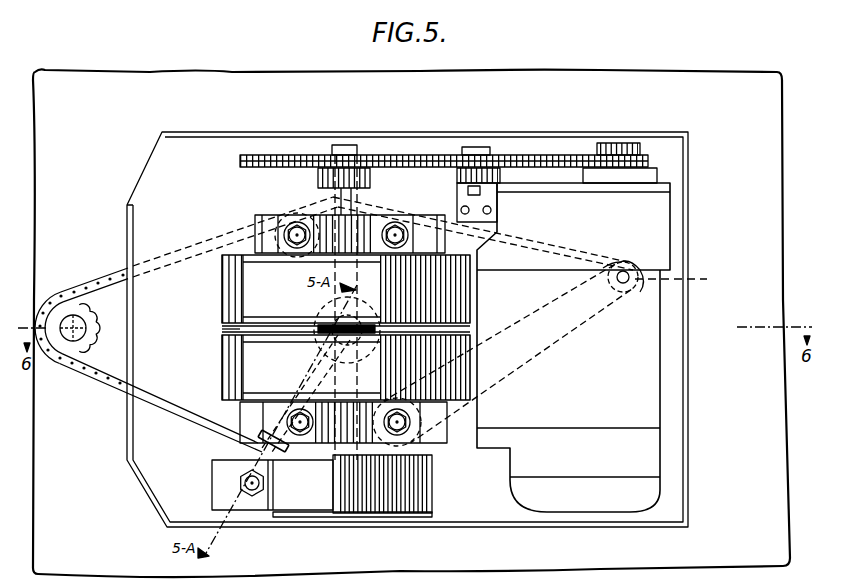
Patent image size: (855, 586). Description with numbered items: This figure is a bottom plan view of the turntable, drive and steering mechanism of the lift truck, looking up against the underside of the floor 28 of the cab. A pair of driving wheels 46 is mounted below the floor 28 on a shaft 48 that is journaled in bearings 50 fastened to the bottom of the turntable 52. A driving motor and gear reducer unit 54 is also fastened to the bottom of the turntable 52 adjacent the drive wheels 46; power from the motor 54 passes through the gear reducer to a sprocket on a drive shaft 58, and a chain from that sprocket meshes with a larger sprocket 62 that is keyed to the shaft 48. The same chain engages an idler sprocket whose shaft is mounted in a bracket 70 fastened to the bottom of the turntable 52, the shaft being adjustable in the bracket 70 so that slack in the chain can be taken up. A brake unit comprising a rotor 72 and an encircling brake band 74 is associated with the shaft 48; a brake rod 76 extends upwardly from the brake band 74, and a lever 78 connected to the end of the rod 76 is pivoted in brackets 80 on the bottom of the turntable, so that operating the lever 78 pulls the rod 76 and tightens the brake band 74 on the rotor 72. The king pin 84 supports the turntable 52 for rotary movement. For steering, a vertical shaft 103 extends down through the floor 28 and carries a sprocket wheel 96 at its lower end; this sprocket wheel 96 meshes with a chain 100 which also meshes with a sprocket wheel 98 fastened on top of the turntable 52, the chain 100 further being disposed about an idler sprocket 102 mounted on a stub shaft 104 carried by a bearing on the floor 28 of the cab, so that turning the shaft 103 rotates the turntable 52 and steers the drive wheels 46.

The floor 28 is at (230, 73).
The turntable 52 is at (148, 163).
The driving motor and gear reducer unit 54 is at (643, 398).
The larger sprocket 62 is at (285, 155).
The drive shaft 58 is at (617, 162).
The bracket 70 is at (455, 196).
The bearings 50 is at (293, 226).
The driving wheels 46 is at (346, 327).
The king pin 84 is at (315, 313).
The sprocket wheel 98 is at (222, 330).
The brake band 74 is at (298, 502).
The brake rod 76 is at (252, 497).
The shaft 48 is at (352, 522).
The rotor 72 is at (317, 517).
The brackets 80 is at (243, 443).
The lever 78 is at (250, 450).
The stub shaft 104 is at (72, 322).
The idler sprocket 102 is at (102, 356).
The chain 100 is at (548, 350).
The sprocket wheel 96 is at (600, 283).
The vertical shaft 103 is at (690, 287).